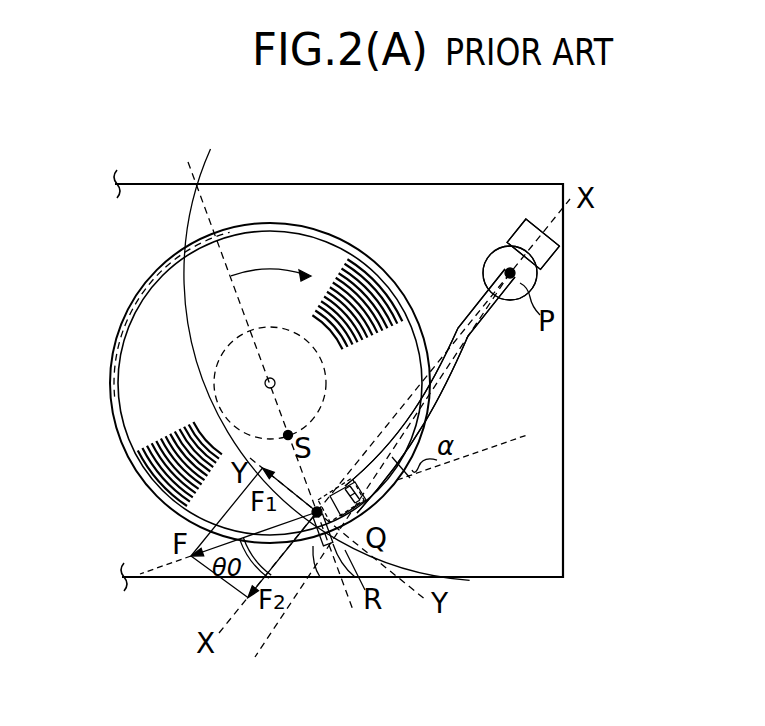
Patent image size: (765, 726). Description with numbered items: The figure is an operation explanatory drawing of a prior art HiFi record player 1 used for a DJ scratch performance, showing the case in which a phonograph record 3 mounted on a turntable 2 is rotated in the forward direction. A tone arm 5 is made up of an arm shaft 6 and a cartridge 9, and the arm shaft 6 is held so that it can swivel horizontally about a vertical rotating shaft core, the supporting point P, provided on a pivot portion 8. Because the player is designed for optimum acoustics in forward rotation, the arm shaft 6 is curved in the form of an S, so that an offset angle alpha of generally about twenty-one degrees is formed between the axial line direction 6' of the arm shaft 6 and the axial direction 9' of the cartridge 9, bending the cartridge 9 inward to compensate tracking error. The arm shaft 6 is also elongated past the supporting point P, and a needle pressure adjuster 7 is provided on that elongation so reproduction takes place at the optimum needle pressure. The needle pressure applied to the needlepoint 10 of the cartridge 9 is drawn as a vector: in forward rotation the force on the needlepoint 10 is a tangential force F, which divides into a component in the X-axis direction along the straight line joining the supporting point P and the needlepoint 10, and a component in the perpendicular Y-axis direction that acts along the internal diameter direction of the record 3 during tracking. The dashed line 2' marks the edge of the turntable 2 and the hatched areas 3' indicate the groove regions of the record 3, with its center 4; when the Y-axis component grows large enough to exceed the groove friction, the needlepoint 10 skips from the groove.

The record player 1 is at (560, 345).
The turntable 2 is at (270, 342).
The disk outer edge 2' is at (142, 314).
The phonograph record 3 is at (141, 446).
The recording track region 3' is at (360, 285).
The disk center (spindle) 4 is at (271, 377).
The tone arm 5 is at (473, 363).
The arm shaft 6 is at (430, 391).
The axial line direction of the arm shaft 6' is at (382, 474).
The needle pressure adjuster 7 is at (527, 230).
The pivot portion 8 is at (492, 252).
The cartridge 9 is at (364, 511).
The axial direction of the cartridge 9' is at (470, 466).
The needlepoint 10 is at (322, 548).